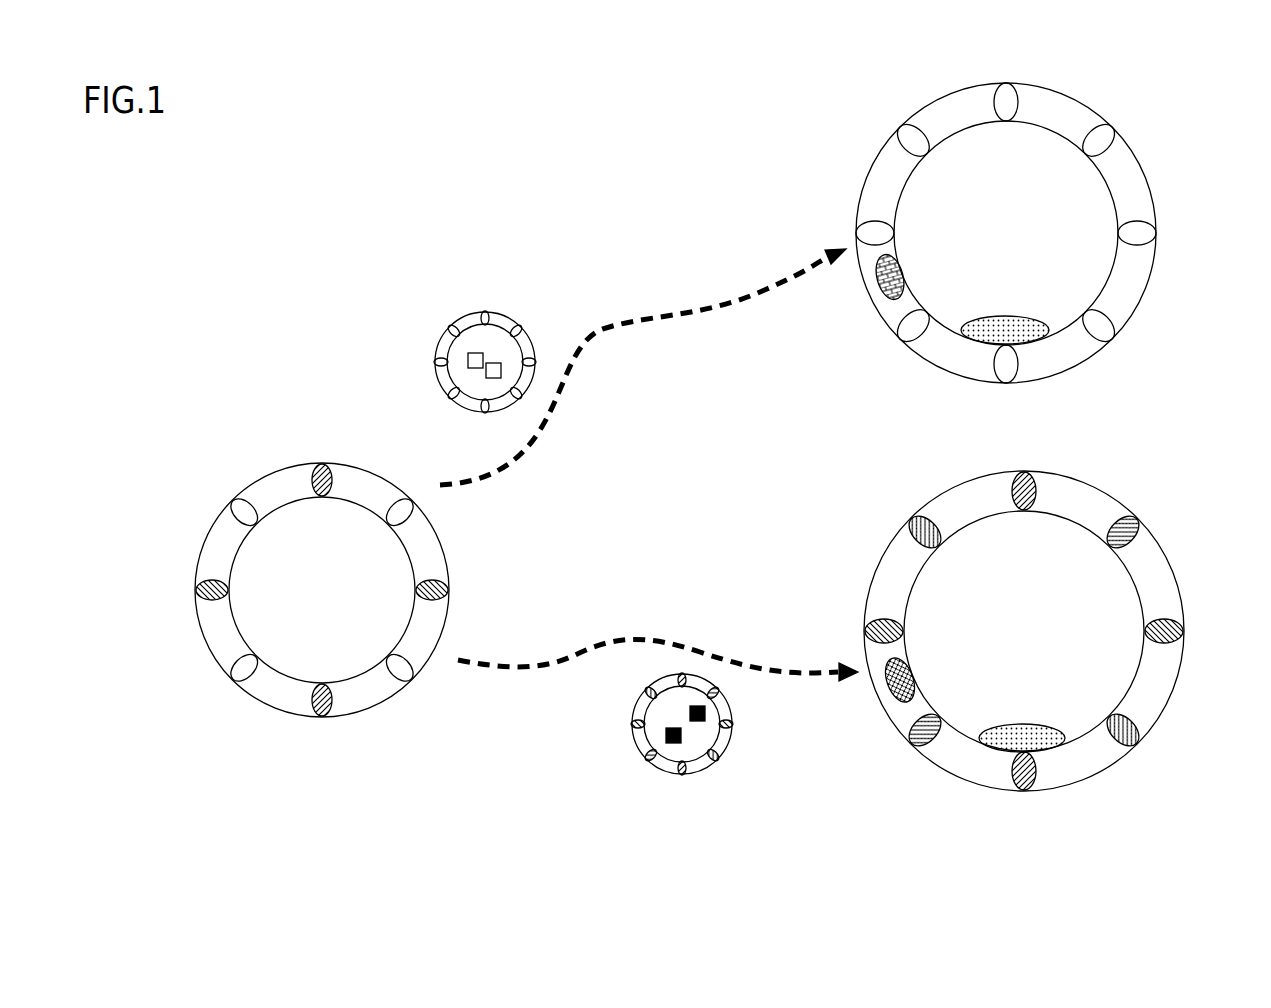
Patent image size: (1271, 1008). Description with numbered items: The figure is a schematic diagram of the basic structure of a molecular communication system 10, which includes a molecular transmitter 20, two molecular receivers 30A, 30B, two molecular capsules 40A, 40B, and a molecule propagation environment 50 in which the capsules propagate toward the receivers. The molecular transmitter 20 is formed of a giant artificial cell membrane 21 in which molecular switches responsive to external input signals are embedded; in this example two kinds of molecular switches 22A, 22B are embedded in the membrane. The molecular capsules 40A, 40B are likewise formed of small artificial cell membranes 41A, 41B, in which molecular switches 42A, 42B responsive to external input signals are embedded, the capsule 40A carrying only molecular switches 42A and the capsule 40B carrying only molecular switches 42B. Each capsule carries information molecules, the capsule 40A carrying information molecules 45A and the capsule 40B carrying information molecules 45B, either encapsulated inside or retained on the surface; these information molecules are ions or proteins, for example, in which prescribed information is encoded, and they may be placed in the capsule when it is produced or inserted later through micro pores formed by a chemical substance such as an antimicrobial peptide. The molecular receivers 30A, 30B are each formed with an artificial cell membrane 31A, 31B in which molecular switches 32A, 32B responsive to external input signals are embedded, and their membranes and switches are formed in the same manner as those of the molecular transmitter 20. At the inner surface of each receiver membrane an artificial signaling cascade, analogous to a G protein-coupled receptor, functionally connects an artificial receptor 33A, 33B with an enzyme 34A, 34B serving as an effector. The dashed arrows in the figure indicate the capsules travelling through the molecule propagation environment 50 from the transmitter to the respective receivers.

The molecular communication system 10 is at (328, 136).
The molecular transmitter 20 is at (173, 608).
The artificial cell membrane 21 is at (322, 619).
The molecular switch 22A is at (213, 494).
The molecular switch 22B is at (472, 605).
The molecular receiver 30A is at (1218, 110).
The artificial cell membrane 31A is at (1006, 248).
The molecular switch 32A is at (886, 131).
The artificial receptor 33A is at (926, 269).
The enzyme 34A is at (1015, 308).
The molecular receiver 30B is at (1218, 529).
The artificial cell membrane 31B is at (1024, 631).
The molecular switch 32B is at (1058, 469).
The artificial receptor 33B is at (938, 676).
The enzyme 34B is at (1034, 715).
The molecular capsule 40A is at (353, 256).
The artificial cell membrane 41A is at (445, 363).
The molecular switch 42A is at (413, 317).
The information molecule 45A is at (528, 334).
The molecular capsule 40B is at (593, 852).
The artificial cell membrane 41B is at (643, 724).
The molecular switch 42B is at (716, 789).
The information molecule 45B is at (734, 745).
The molecule propagation environment 50 is at (649, 465).